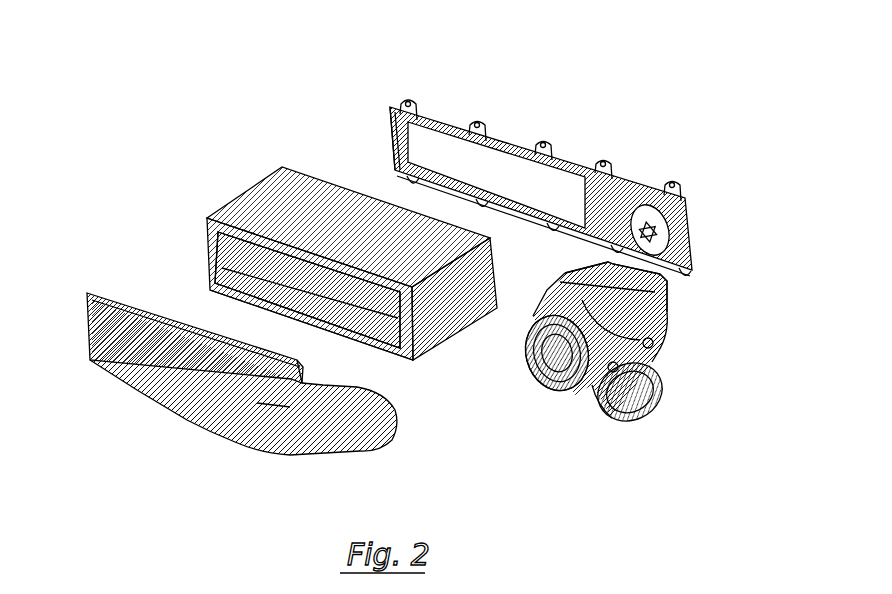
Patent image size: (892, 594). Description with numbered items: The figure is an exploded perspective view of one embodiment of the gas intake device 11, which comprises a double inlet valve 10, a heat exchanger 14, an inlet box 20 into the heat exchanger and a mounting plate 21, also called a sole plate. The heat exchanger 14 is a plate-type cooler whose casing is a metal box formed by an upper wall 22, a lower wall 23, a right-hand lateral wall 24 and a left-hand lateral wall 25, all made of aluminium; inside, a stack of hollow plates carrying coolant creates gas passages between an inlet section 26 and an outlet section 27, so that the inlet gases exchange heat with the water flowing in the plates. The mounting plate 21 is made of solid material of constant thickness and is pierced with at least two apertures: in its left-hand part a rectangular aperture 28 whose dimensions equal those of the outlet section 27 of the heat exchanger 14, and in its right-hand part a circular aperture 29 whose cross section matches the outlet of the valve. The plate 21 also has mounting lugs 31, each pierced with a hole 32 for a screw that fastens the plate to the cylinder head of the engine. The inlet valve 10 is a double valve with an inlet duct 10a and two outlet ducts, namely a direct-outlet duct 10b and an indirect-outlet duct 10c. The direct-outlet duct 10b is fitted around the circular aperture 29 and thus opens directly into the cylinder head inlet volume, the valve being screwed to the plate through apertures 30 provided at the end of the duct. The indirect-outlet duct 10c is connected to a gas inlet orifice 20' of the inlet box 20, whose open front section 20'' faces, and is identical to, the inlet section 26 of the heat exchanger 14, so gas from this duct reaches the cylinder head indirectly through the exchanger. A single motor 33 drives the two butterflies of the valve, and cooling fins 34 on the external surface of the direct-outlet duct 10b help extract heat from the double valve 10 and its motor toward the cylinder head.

The inlet valve 10 is at (617, 440).
The inlet duct 10a is at (650, 367).
The direct-outlet duct 10b is at (667, 310).
The indirect-outlet duct 10c is at (570, 392).
The gas intake device 11 is at (112, 70).
The heat exchanger 14 is at (240, 210).
The inlet box 20 is at (222, 362).
The gas inlet orifice 20' is at (248, 434).
The front section 20'' is at (202, 338).
The mounting plate 21 is at (625, 167).
The upper wall 22 is at (328, 214).
The lower wall 23 is at (347, 340).
The right-hand lateral wall 24 is at (463, 323).
The left-hand lateral wall 25 is at (208, 248).
The inlet section 26 is at (250, 277).
The outlet section 27 is at (330, 170).
The rectangular aperture 28 is at (508, 168).
The circular aperture 29 is at (665, 225).
The apertures 30 is at (667, 287).
The mounting lugs 31 is at (555, 143).
The hole 32 is at (541, 142).
The motor 33 is at (557, 292).
The cooling fins 34 is at (605, 275).